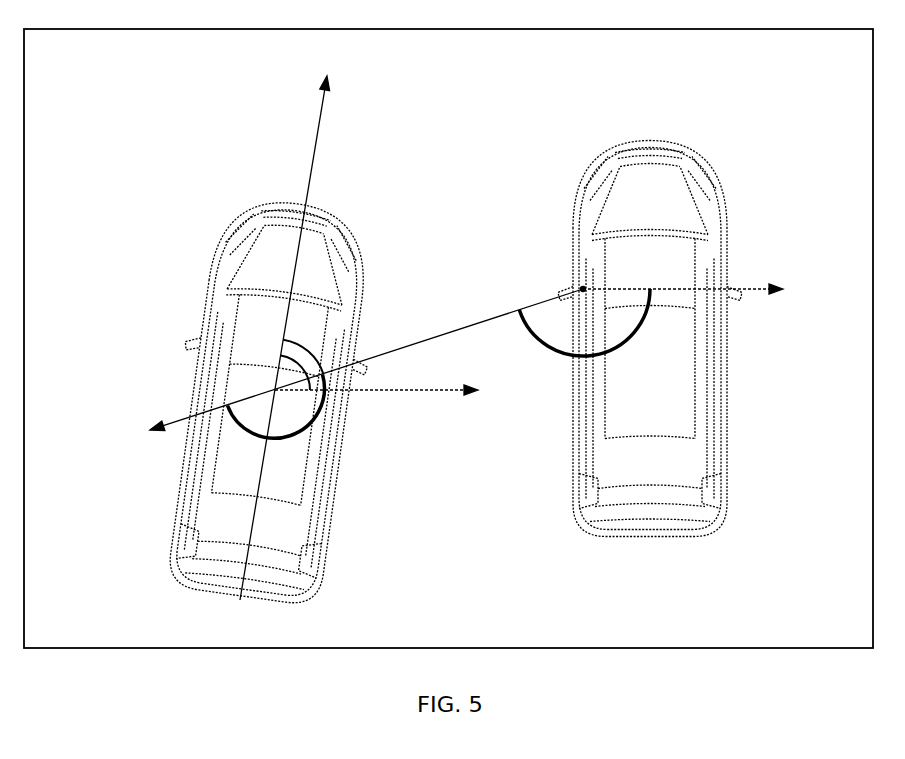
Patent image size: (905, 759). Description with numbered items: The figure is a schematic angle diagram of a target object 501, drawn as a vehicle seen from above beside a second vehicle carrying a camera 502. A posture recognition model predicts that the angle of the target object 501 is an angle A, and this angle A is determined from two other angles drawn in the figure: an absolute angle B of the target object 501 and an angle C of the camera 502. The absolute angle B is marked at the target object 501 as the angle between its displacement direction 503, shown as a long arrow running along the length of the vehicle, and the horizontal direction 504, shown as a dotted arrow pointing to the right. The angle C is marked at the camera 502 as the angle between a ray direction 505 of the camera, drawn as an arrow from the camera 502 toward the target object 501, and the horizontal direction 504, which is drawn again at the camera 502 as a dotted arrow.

The target object 501 is at (323, 253).
The camera 502 is at (577, 273).
The displacement direction 503 is at (323, 316).
The horizontal direction 504 is at (572, 340).
The ray direction 505 is at (310, 398).
The angle of the target object A is at (287, 456).
The absolute angle B is at (320, 361).
The angle of the camera C is at (637, 356).